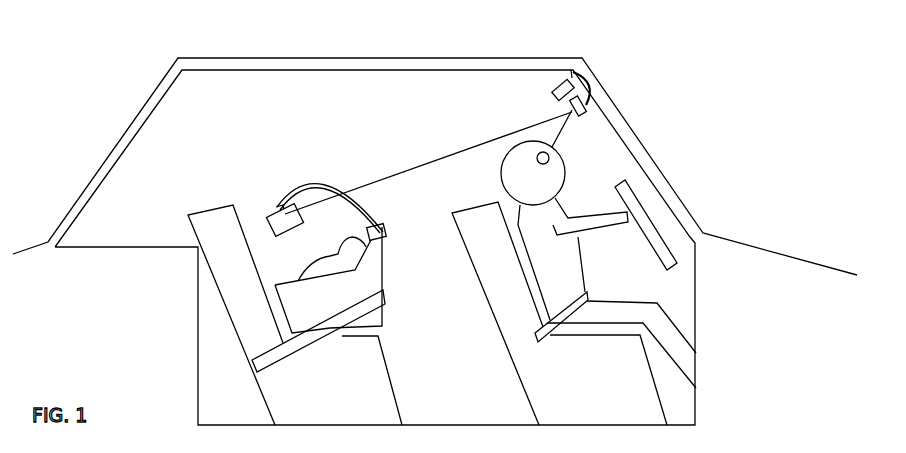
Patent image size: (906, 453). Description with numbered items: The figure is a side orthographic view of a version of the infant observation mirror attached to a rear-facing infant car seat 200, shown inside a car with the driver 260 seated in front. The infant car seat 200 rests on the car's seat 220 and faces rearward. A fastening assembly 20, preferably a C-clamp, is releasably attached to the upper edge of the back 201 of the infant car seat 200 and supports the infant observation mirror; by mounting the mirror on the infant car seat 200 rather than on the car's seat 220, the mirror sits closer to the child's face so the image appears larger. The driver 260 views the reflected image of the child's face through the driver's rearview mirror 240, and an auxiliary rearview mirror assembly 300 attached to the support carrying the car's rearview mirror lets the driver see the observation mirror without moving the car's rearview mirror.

The fastening assembly 20 is at (383, 224).
The rear-facing infant car seat 200 is at (328, 295).
The back 201 is at (378, 242).
The car's seat 220 is at (243, 288).
The driver's rearview mirror 240 is at (567, 83).
The driver 260 is at (565, 152).
The auxiliary rearview mirror assembly 300 is at (590, 90).